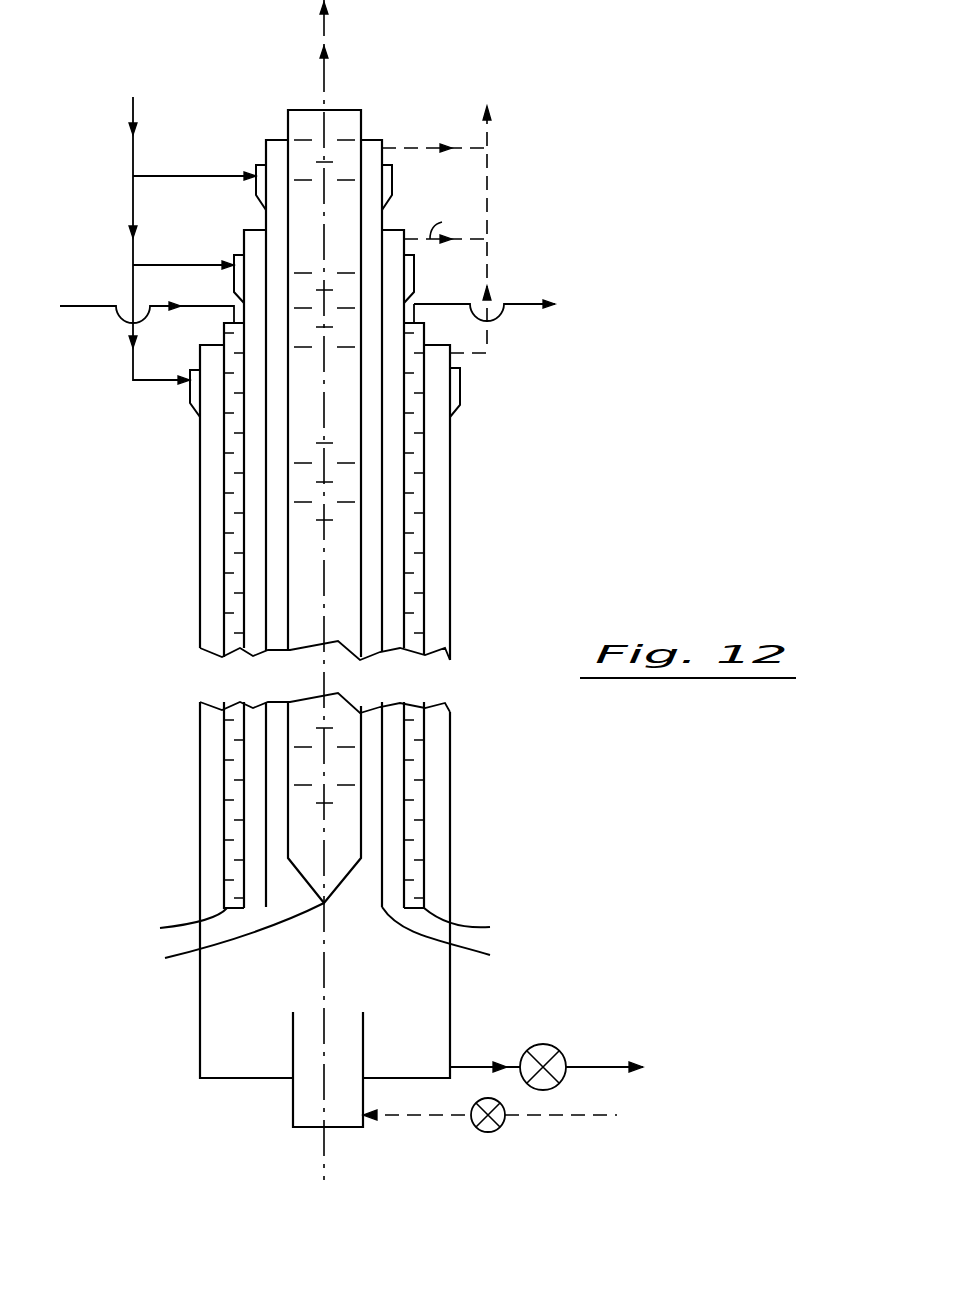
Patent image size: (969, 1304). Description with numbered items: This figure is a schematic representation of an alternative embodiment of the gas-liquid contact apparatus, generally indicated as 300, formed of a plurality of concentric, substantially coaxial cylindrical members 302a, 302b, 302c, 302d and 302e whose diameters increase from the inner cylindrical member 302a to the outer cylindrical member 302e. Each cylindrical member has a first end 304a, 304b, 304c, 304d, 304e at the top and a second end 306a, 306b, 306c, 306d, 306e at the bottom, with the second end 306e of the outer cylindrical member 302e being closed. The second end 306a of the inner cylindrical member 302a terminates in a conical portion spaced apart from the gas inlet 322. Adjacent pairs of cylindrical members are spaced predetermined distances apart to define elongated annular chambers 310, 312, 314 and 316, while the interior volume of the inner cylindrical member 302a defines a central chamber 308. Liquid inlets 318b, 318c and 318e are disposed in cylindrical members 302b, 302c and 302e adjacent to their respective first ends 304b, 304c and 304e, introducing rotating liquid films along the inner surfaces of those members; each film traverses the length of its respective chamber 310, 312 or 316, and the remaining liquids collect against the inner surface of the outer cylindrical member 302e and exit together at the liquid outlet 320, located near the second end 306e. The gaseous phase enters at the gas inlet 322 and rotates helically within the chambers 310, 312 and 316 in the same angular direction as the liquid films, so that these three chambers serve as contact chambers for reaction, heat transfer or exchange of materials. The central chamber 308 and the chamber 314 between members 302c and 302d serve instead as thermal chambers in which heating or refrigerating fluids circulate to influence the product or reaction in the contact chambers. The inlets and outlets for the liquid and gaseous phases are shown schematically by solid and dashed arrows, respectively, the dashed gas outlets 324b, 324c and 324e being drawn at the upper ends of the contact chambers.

The apparatus 300 is at (563, 508).
The inner cylindrical member 302a is at (357, 790).
The cylindrical member 302b is at (385, 795).
The cylindrical member 302c is at (403, 810).
The cylindrical member 302d is at (427, 837).
The outer cylindrical member 302e is at (452, 853).
The first end 304a is at (340, 107).
The first end 304b is at (368, 137).
The first end 304c is at (394, 230).
The first end 304d is at (424, 323).
The first end 304e is at (448, 343).
The second end 306a is at (210, 938).
The second end 306b is at (468, 939).
The second end 306c is at (162, 924).
The second end 306d is at (489, 924).
The second end 306e is at (200, 1078).
The central chamber 308 is at (347, 418).
The annular chamber 310 is at (273, 528).
The annular chamber 312 is at (253, 538).
The annular chamber 314 is at (232, 565).
The annular chamber 316 is at (208, 622).
The liquid inlet 318b is at (253, 192).
The liquid inlet 318c is at (233, 277).
The liquid inlet 318e is at (188, 385).
The liquid outlet 320 is at (470, 1065).
The gas inlet 322 is at (293, 1108).
The gas outlet 324b is at (390, 147).
The gas outlet 324c is at (442, 222).
The gas outlet 324e is at (487, 345).